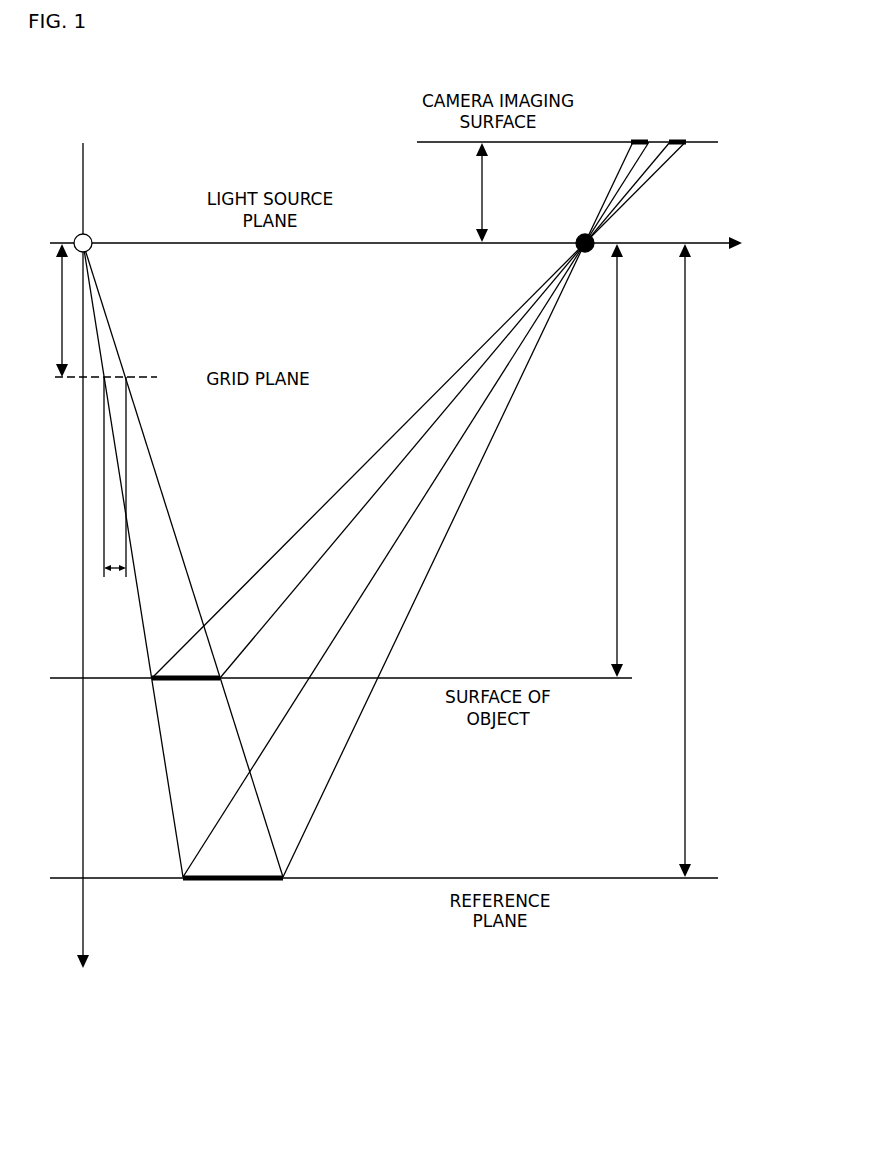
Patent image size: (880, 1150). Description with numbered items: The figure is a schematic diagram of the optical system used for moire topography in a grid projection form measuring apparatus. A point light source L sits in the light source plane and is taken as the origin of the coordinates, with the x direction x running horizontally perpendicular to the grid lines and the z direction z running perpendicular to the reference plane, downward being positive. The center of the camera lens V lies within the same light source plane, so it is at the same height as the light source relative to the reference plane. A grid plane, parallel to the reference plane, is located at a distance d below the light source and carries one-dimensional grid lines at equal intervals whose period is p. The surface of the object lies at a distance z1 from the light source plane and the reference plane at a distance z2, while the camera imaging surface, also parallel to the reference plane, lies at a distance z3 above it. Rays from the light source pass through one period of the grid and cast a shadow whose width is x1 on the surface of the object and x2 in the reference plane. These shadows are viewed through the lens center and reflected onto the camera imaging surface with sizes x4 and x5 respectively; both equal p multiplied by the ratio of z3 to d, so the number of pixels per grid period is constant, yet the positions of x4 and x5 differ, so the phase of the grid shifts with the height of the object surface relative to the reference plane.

The light source L is at (75, 224).
The center of the camera lens V is at (575, 233).
The x direction x is at (411, 244).
The z direction z is at (83, 576).
The distance between light source and grid plane d is at (51, 310).
The period of the grid p is at (115, 493).
The distance to the surface of the object z1 is at (630, 460).
The distance to the reference plane z2 is at (702, 560).
The distance to the camera imaging surface z3 is at (498, 192).
The shadow of one grid period on the surface of the object x1 is at (186, 697).
The shadow of one grid period in the reference plane x2 is at (233, 896).
The size of one grid period imaged from the object surface x4 is at (683, 126).
The size of one grid period imaged from the reference plane x5 is at (637, 126).